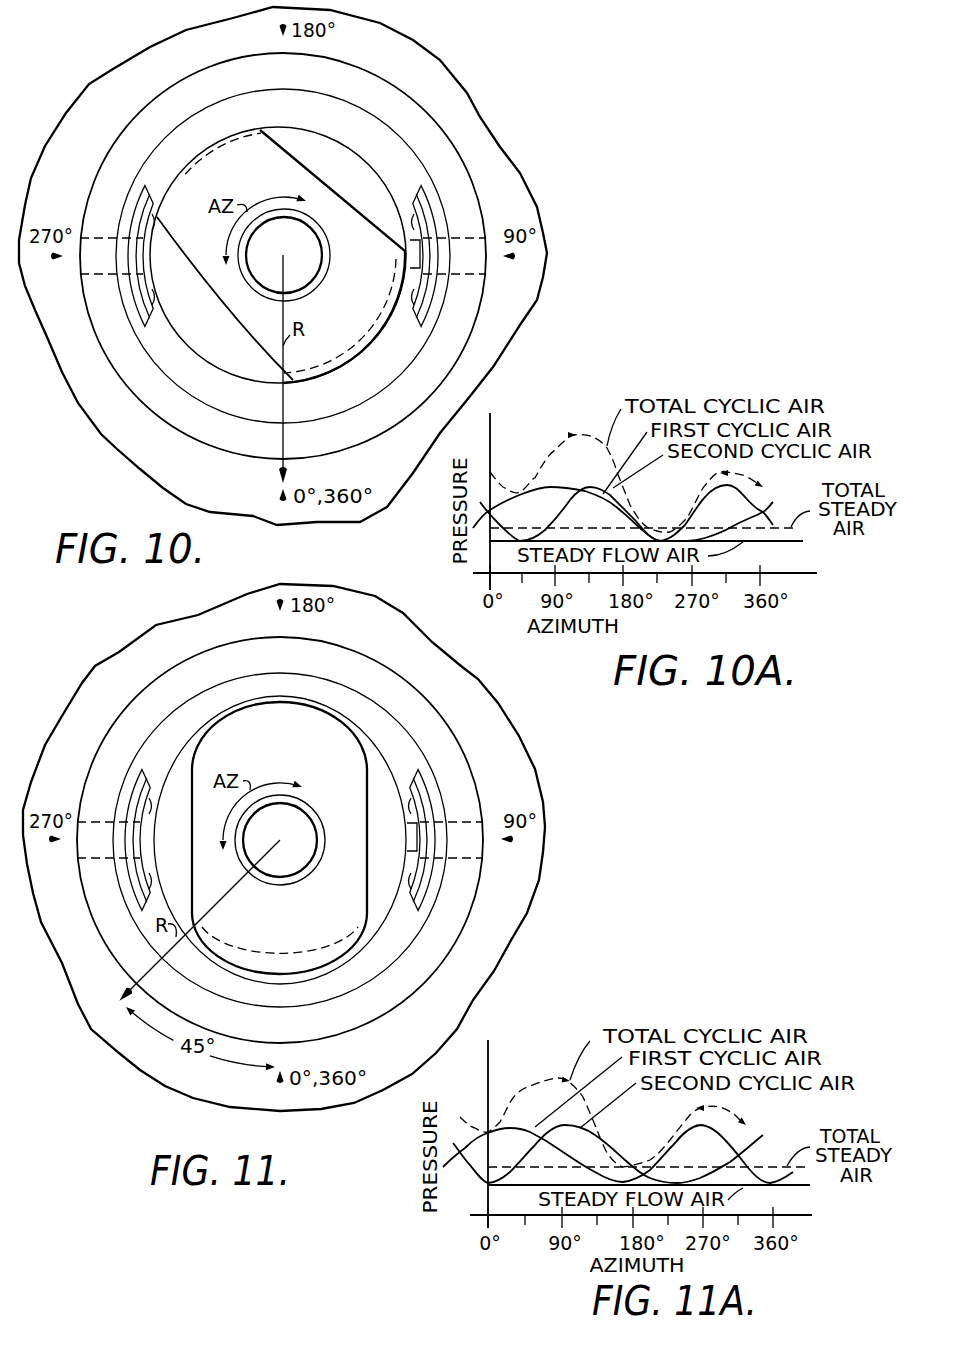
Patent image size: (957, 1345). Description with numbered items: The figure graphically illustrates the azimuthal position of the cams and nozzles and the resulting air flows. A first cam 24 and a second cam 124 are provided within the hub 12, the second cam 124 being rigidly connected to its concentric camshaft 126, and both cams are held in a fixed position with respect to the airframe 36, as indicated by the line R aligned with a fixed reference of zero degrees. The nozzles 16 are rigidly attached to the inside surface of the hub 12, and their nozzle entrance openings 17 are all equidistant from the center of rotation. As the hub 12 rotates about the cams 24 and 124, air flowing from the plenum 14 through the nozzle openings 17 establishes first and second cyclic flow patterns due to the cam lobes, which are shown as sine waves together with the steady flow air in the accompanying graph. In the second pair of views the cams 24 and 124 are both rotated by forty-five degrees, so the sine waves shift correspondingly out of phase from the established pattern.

In FIG. 10, the hub 12 is at (438, 370).
In FIG. 11, the hub 12 is at (447, 930).
In FIG. 10, the plenum 14 is at (262, 410).
In FIG. 11, the plenum 14 is at (205, 972).
In FIG. 10, the nozzles 16 is at (428, 203).
In FIG. 11, the nozzles 16 is at (428, 782).
In FIG. 10, the nozzle entrance openings 17 is at (427, 254).
In FIG. 11, the nozzle entrance openings 17 is at (418, 852).
In FIG. 10, the first cam 24 is at (204, 332).
In FIG. 11, the first cam 24 is at (184, 840).
In FIG. 10, the airframe 36 is at (512, 318).
In FIG. 11, the airframe 36 is at (457, 697).
In FIG. 10, the second cam 124 is at (362, 326).
In FIG. 11, the second cam 124 is at (302, 754).
In FIG. 10, the camshaft 126 is at (327, 244).
In FIG. 11, the camshaft 126 is at (318, 806).